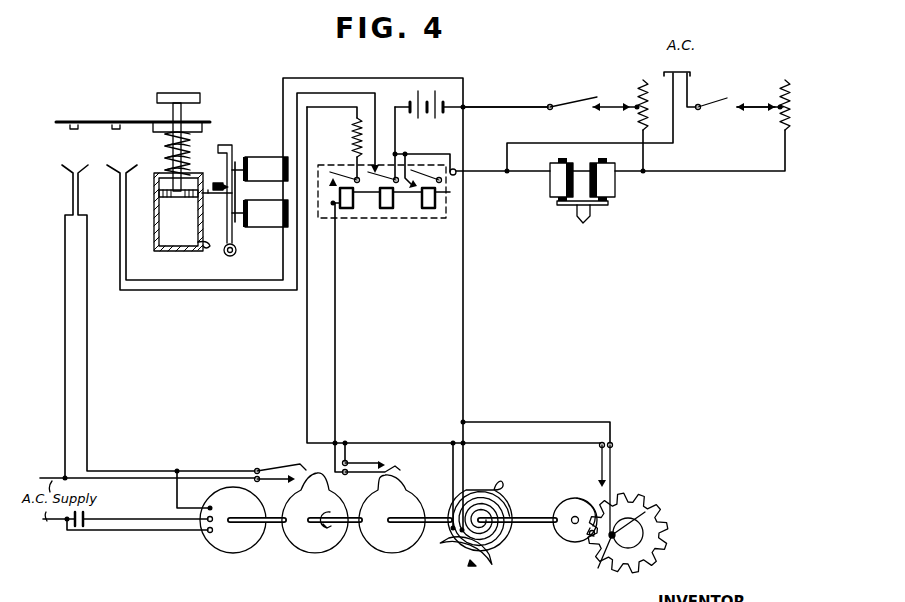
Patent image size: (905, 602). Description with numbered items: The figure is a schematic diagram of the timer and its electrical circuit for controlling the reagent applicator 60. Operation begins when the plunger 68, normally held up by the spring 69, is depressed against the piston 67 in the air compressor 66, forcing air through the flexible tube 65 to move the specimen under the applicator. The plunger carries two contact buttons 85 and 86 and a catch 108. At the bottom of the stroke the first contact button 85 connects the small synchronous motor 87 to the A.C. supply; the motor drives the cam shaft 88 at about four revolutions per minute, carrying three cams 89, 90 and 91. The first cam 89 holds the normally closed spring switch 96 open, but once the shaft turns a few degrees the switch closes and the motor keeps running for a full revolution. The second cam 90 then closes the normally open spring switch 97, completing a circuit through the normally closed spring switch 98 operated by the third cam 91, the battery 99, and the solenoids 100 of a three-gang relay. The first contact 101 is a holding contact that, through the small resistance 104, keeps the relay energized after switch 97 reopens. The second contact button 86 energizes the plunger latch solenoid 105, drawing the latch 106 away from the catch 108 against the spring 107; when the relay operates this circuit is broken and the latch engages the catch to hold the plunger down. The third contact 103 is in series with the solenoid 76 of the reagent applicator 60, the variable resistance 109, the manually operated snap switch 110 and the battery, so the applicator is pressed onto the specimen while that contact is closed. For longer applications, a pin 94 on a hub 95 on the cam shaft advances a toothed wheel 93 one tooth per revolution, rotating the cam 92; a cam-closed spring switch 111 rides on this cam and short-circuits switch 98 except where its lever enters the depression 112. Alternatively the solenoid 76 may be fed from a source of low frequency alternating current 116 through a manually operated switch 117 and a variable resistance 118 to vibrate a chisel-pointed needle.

The reagent applicator 60 is at (601, 216).
The flexible tube 65 is at (205, 248).
The air compressor 66 is at (154, 218).
The piston 67 is at (180, 198).
The plunger 68 is at (201, 96).
The spring 69 is at (163, 148).
The solenoid 76 is at (550, 184).
The contact button 85 is at (70, 130).
The contact button 86 is at (116, 130).
The synchronous motor 87 is at (232, 553).
The cam shaft 88 is at (278, 527).
The first cam 89 is at (333, 550).
The second cam 90 is at (405, 553).
The third cam 91 is at (511, 532).
The cam 92 is at (638, 522).
The toothed wheel 93 is at (668, 546).
The pin 94 is at (577, 498).
The hub 95 is at (569, 540).
The spring switch 96 is at (284, 463).
The spring switch 97 is at (394, 467).
The spring switch 98 is at (492, 567).
The battery 99 is at (410, 97).
The solenoids 100 is at (425, 210).
The first contact 101 is at (330, 172).
The third contact 103 is at (413, 162).
The resistance 104 is at (353, 128).
The plunger latch solenoid 105 is at (265, 157).
The latch 106 is at (221, 145).
The spring 107 is at (216, 183).
The catch 108 is at (203, 127).
The variable resistance 109 is at (641, 80).
The snap switch 110 is at (578, 100).
The spring switch 111 is at (613, 463).
The depression 112 is at (604, 568).
The source of low frequency alternating current 116 is at (687, 84).
The switch 117 is at (740, 104).
The variable resistance 118 is at (775, 126).